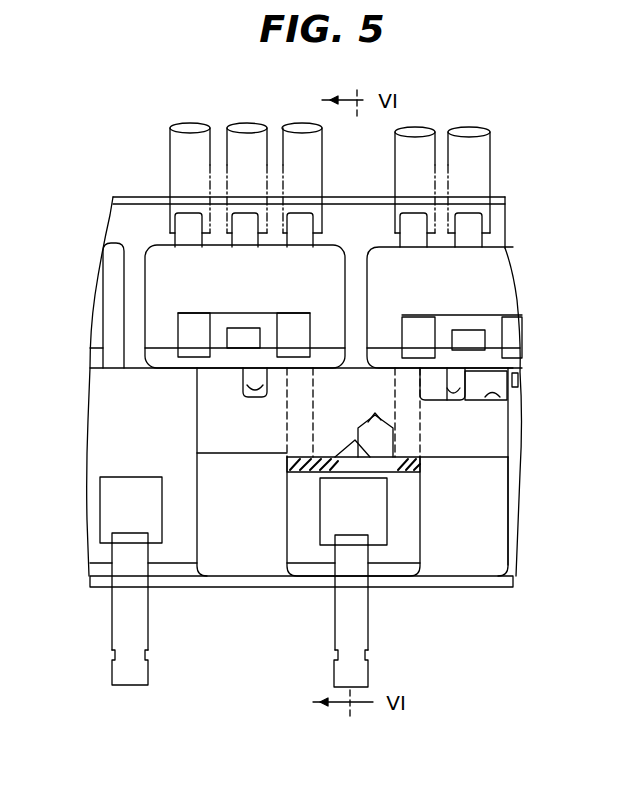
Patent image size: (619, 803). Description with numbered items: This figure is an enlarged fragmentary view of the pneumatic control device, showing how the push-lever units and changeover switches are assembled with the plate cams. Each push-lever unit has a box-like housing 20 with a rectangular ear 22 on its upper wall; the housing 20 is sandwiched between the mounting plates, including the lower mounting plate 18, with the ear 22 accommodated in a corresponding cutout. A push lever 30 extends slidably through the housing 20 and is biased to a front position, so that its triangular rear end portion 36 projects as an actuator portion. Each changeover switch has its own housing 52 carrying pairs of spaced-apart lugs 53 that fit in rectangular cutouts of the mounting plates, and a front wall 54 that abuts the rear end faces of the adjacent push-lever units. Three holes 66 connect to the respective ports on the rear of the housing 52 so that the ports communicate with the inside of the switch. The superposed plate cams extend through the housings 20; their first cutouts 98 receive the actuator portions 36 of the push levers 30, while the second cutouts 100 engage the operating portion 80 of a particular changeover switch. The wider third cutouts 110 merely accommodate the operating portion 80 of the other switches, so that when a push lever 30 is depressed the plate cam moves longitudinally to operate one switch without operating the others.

The lower mounting plate 18 is at (255, 567).
The housing 20 is at (188, 493).
The upper rectangular ear 22 is at (112, 512).
The push lever 30 is at (126, 628).
The rear end portion 36 is at (340, 457).
The housing 52 is at (155, 275).
The lug 53 is at (203, 320).
The front wall 54 is at (421, 365).
The hole 66 is at (182, 130).
The operating portion 80 is at (253, 377).
The first cutout 98 is at (381, 425).
The second cutout 100 is at (253, 396).
The third cutout 110 is at (493, 397).